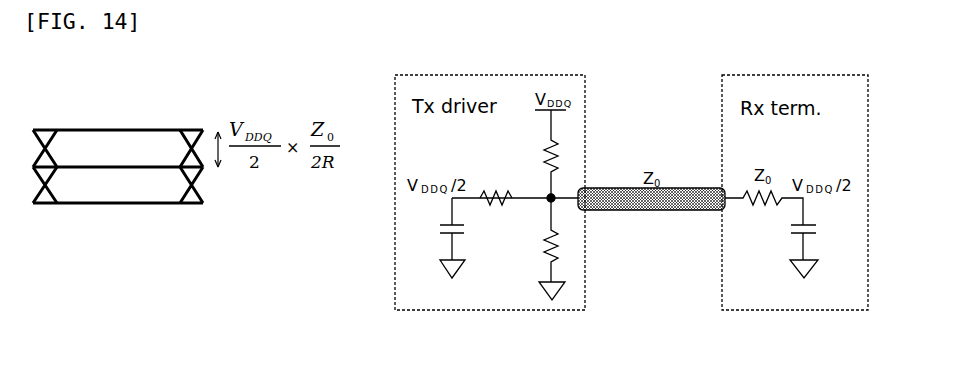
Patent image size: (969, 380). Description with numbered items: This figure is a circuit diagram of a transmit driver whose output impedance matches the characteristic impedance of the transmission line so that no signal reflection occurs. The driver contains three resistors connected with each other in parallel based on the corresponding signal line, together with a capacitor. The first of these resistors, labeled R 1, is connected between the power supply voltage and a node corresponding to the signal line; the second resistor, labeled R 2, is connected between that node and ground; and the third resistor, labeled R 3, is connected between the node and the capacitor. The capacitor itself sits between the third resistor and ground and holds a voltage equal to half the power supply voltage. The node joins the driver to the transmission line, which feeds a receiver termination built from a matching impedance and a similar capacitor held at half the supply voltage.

The pull-up resistor R1 1 is at (537, 166).
The pull-down resistor R2 2 is at (537, 240).
The series resistor R3 3 is at (496, 188).